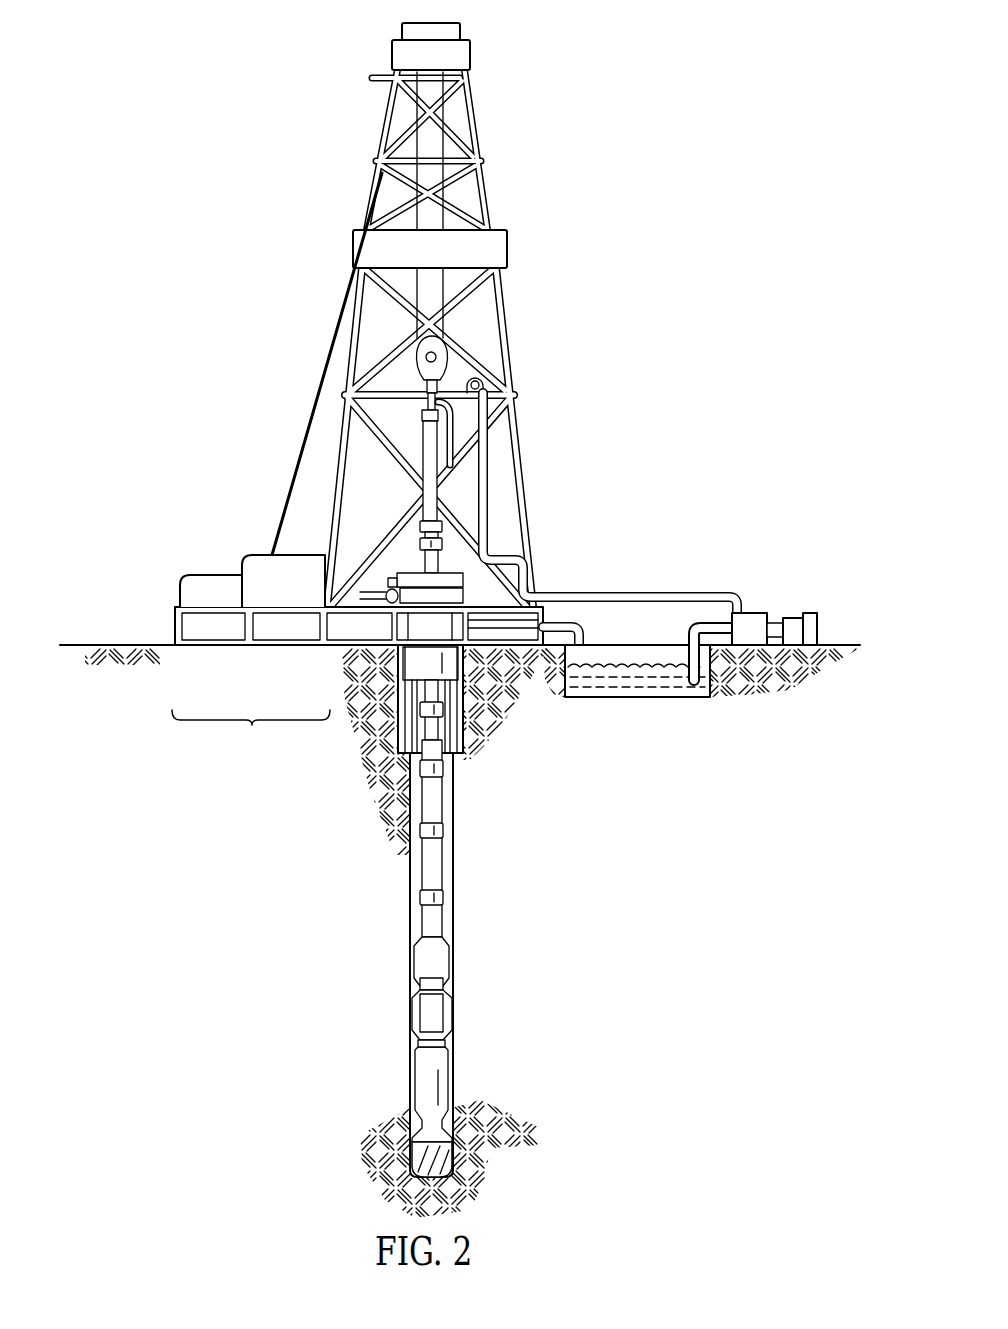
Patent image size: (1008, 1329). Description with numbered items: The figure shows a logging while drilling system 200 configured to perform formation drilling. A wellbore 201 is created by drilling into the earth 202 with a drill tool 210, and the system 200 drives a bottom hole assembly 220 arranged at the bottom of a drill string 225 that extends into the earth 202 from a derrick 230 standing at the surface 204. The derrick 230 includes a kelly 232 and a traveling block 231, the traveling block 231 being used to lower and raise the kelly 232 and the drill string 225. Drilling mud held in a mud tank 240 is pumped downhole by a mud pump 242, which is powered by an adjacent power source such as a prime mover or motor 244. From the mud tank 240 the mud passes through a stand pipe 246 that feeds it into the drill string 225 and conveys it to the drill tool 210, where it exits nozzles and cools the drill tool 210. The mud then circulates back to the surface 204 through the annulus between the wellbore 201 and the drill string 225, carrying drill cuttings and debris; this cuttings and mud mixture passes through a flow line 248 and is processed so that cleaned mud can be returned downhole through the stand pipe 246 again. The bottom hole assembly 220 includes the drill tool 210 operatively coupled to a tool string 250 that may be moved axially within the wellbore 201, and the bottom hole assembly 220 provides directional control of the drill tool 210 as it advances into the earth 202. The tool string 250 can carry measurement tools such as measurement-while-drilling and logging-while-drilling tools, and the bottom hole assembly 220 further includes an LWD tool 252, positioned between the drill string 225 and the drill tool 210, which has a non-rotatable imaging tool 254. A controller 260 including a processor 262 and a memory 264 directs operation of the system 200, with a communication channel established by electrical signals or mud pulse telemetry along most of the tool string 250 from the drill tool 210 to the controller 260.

The logging while drilling system 200 is at (280, 80).
The wellbore 201 is at (452, 875).
The earth 202 is at (231, 905).
The surface 204 is at (103, 645).
The drill tool 210 is at (450, 1148).
The bottom hole assembly 220 is at (348, 893).
The drill string 225 is at (442, 800).
The derrick 230 is at (480, 147).
The traveling block 231 is at (410, 372).
The kelly 232 is at (428, 447).
The mud tank 240 is at (636, 667).
The mud pump 242 is at (750, 613).
The motor 244 is at (806, 618).
The stand pipe 246 is at (490, 475).
The flow line 248 is at (567, 622).
The tool string 250 is at (438, 958).
The LWD tool 252 is at (417, 985).
The non-rotatable imaging tool 254 is at (420, 1010).
The controller 260 is at (251, 734).
The processor 262 is at (214, 633).
The memory 264 is at (288, 633).